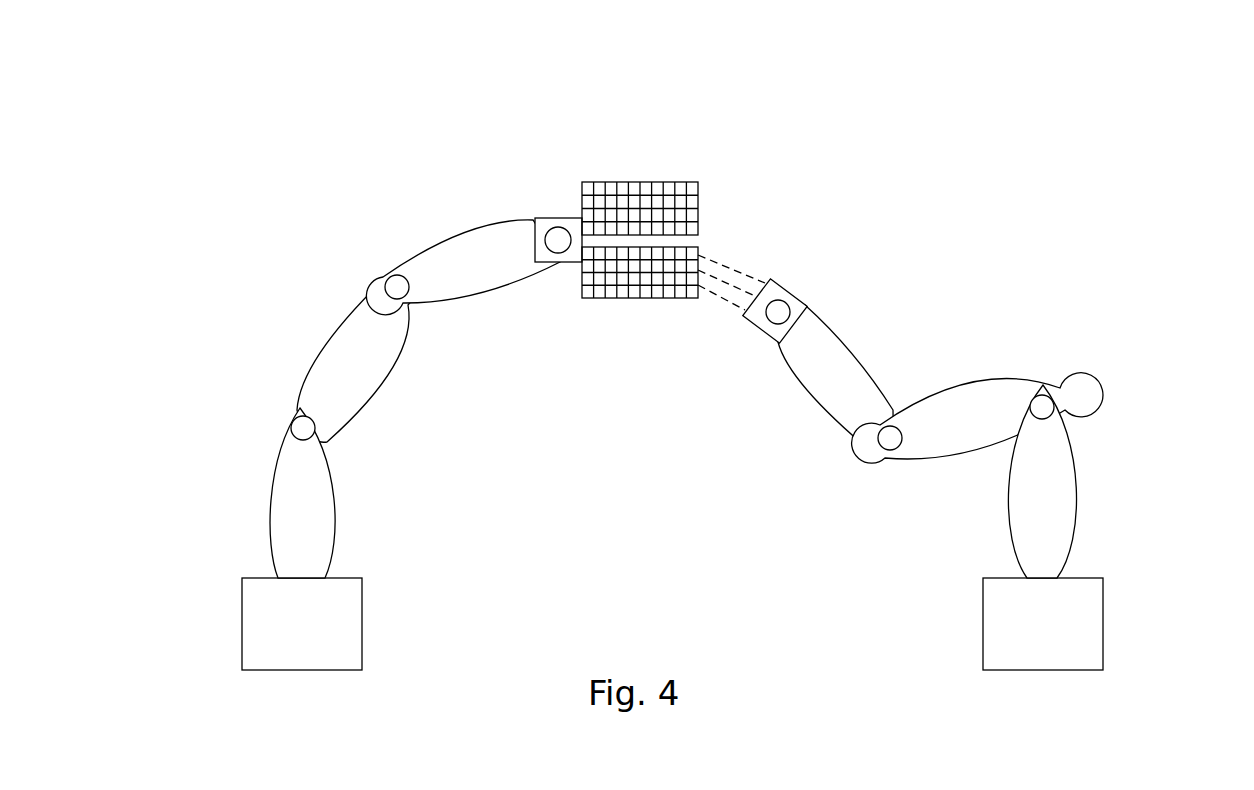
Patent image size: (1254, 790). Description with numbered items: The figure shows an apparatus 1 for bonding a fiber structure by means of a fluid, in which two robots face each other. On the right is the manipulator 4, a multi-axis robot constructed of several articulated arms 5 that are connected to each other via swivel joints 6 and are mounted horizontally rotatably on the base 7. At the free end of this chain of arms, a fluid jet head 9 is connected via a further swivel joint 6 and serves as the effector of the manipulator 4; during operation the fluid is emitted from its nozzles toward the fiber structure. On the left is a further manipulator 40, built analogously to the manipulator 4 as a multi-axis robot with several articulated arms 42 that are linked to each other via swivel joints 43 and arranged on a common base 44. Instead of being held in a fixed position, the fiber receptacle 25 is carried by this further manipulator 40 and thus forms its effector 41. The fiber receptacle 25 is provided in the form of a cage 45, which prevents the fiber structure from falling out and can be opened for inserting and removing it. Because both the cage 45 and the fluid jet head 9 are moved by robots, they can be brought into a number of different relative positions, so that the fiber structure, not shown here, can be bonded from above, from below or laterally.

The apparatus 1 is at (962, 190).
The manipulator 4 is at (1060, 232).
The articulated arms 5 is at (953, 418).
The swivel joints 6 is at (778, 312).
The base 7 is at (1075, 637).
The fluid jet head 9 is at (767, 297).
The fiber receptacle 25 is at (682, 167).
The cage 45 is at (648, 187).
The further manipulator 40 is at (267, 233).
The effector 41 is at (627, 166).
The articulated arms 42 is at (305, 477).
The swivel joints 43 is at (397, 287).
The base 44 is at (337, 640).